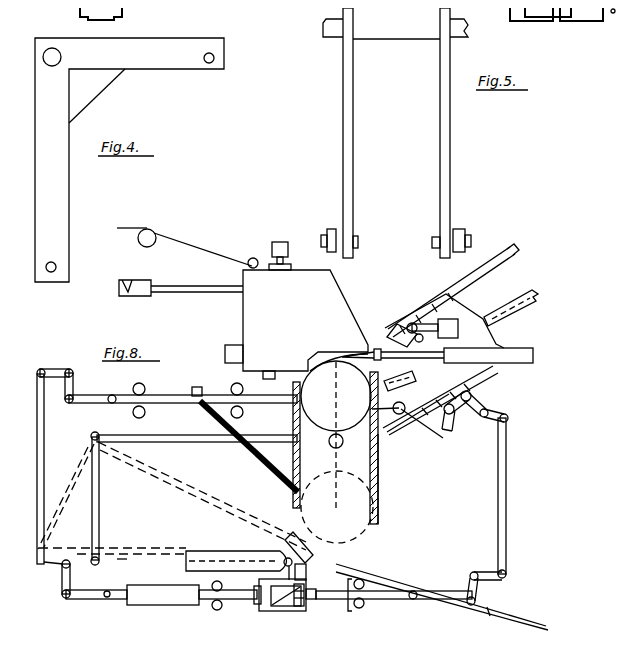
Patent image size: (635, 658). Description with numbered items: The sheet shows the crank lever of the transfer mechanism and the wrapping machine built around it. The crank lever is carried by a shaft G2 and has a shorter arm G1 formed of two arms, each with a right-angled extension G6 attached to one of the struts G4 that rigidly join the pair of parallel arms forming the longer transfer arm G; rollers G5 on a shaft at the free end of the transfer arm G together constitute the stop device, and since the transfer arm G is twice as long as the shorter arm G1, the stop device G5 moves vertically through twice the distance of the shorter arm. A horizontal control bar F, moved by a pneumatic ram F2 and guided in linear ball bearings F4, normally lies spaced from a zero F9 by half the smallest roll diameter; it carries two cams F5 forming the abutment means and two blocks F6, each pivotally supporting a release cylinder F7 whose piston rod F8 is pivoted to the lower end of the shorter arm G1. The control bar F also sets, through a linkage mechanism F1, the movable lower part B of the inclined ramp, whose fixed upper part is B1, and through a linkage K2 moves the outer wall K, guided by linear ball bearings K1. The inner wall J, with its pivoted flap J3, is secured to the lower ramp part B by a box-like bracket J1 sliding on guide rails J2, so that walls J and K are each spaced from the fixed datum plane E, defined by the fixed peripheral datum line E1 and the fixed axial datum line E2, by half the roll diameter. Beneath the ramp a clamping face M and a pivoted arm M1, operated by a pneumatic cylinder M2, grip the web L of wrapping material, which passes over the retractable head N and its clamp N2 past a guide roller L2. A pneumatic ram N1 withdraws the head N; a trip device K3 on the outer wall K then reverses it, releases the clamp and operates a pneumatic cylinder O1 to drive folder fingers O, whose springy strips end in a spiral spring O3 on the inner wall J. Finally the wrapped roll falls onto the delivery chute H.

In FIG. 8, the transfer arm G is at (179, 438).
In FIG. 4, the shorter arm G1 is at (45, 165).
In FIG. 5, the shorter arm G1 is at (335, 114).
In FIG. 8, the shorter arm G1 is at (97, 503).
In FIG. 4, the shaft G2 is at (38, 52).
In FIG. 5, the shaft G2 is at (327, 23).
In FIG. 8, the shaft G2 is at (90, 430).
In FIG. 4, the struts G4 is at (207, 51).
In FIG. 8, the rollers G5 is at (328, 444).
In FIG. 4, the extension G6 is at (135, 53).
In FIG. 8, the control bar F is at (283, 612).
In FIG. 8, the linkage mechanism F1 is at (504, 505).
In FIG. 8, the pneumatic ram F2 is at (148, 601).
In FIG. 8, the linear ball bearings F4 is at (212, 605).
In FIG. 8, the cams F5 is at (317, 549).
In FIG. 8, the blocks F6 is at (256, 607).
In FIG. 8, the pneumatic cylinder F7 is at (207, 552).
In FIG. 5, the piston rod F8 is at (324, 221).
In FIG. 8, the piston rod F8 is at (120, 555).
In FIG. 8, the zero F9 is at (370, 620).
In FIG. 8, the delivery chute H is at (485, 609).
In FIG. 8, the inner wall J is at (389, 452).
In FIG. 8, the box-like bracket J1 is at (482, 369).
In FIG. 8, the guide rails J2 is at (512, 305).
In FIG. 8, the pivoted flap J3 is at (378, 500).
In FIG. 8, the outer wall K is at (289, 462).
In FIG. 8, the linear ball bearings K1 is at (228, 398).
In FIG. 8, the linkage K2 is at (37, 455).
In FIG. 8, the trip device K3 is at (195, 381).
In FIG. 8, the web of wrapping material L is at (203, 245).
In FIG. 8, the guide roller L2 is at (152, 229).
In FIG. 8, the clamping face M is at (398, 322).
In FIG. 8, the pivoted arm M1 is at (407, 340).
In FIG. 8, the pneumatic cylinder M2 is at (447, 315).
In FIG. 8, the retractable head N is at (310, 270).
In FIG. 8, the pneumatic ram N1 is at (117, 290).
In FIG. 8, the clamp N2 is at (268, 246).
In FIG. 8, the folder fingers O is at (372, 344).
In FIG. 8, the pneumatic cylinder O1 is at (520, 344).
In FIG. 8, the spiral spring O3 is at (423, 425).
In FIG. 8, the fixed datum plane E is at (332, 480).
In FIG. 8, the fixed peripheral datum line E1 is at (330, 372).
In FIG. 8, the fixed axial datum line E2 is at (336, 500).
In FIG. 8, the lower part of inclined ramp B is at (437, 310).
In FIG. 8, the upper part of inclined ramp B1 is at (513, 251).